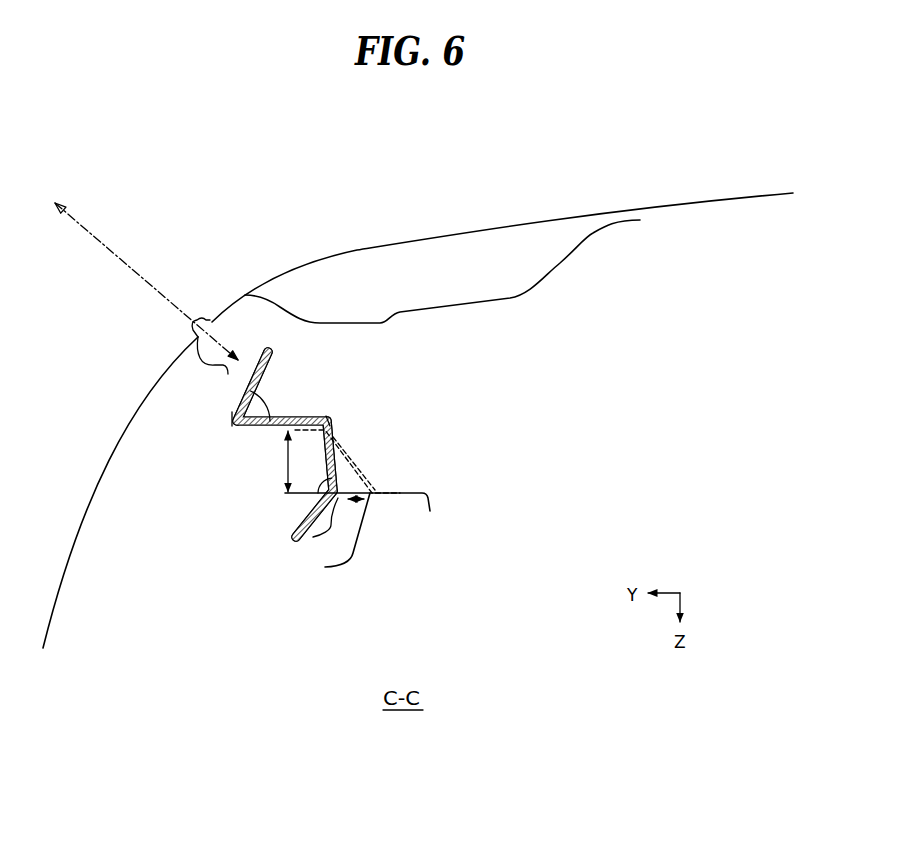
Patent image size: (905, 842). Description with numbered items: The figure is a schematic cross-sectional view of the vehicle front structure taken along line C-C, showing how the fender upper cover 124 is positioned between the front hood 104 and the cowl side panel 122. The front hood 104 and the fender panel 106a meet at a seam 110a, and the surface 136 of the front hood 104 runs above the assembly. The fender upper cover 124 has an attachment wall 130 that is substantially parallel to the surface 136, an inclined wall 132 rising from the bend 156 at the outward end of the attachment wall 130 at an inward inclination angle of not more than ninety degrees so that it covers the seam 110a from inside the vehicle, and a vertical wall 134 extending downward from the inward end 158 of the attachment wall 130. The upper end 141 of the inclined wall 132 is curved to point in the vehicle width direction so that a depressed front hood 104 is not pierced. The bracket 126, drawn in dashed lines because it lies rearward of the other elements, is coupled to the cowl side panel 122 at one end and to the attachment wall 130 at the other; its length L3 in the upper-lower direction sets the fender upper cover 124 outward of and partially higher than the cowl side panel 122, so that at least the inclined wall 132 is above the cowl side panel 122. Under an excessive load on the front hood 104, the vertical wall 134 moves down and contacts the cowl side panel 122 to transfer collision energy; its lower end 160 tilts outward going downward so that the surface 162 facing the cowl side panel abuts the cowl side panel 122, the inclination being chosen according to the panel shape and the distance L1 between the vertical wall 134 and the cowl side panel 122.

The front hood 104 is at (437, 263).
The surface of the front hood 136 is at (357, 250).
The upper end of the inclined wall 141 is at (280, 345).
The seam 110a is at (193, 318).
The fender panel 106a is at (97, 488).
The attachment wall 130 is at (333, 466).
The inclined wall 132 is at (263, 375).
The vertical wall 134 is at (342, 438).
The surface of the vertical wall 162 is at (312, 537).
The first bent portion 156 is at (228, 420).
The end of the attachment wall 158 is at (333, 420).
The bracket 126 is at (360, 470).
The cowl side panel 122 is at (430, 507).
The lower end of the vertical wall 160 is at (343, 530).
The fender upper cover 124 is at (228, 492).
The distance from the vertical wall to the cowl side panel L1 is at (362, 504).
The length of the bracket in the upper-lower direction L3 is at (275, 461).